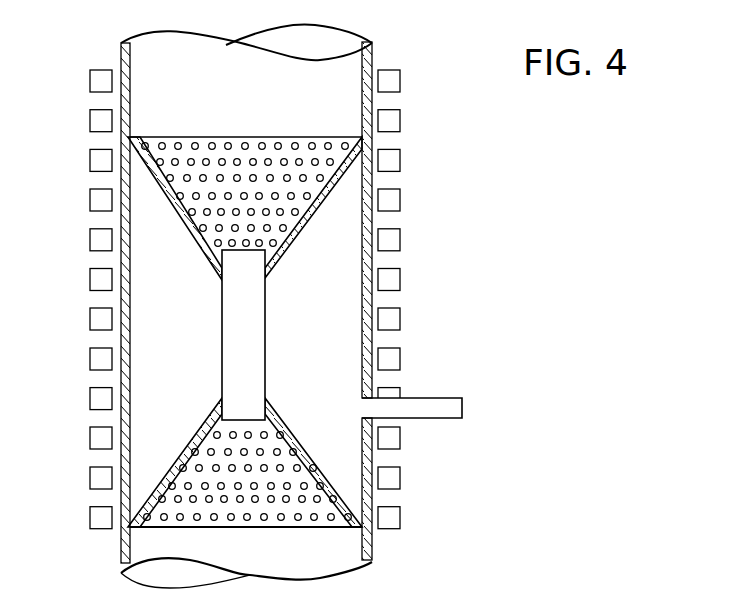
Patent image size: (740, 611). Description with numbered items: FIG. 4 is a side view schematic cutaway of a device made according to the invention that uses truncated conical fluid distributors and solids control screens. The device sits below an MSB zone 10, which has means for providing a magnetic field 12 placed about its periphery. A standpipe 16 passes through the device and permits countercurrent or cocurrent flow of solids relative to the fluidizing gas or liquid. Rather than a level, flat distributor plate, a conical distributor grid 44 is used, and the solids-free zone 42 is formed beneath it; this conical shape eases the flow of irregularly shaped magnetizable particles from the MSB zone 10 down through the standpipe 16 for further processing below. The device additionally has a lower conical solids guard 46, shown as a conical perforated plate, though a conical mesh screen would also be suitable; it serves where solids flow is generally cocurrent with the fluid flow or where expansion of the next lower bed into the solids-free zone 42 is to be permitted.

The MSB zone 10 is at (246, 99).
The means for providing a magnetic field 12 is at (90, 82).
The standpipe 16 is at (265, 332).
The solids-free zone 42 is at (183, 352).
The conical distributor grid 44 is at (318, 200).
The lower conical solids guard 46 is at (296, 437).